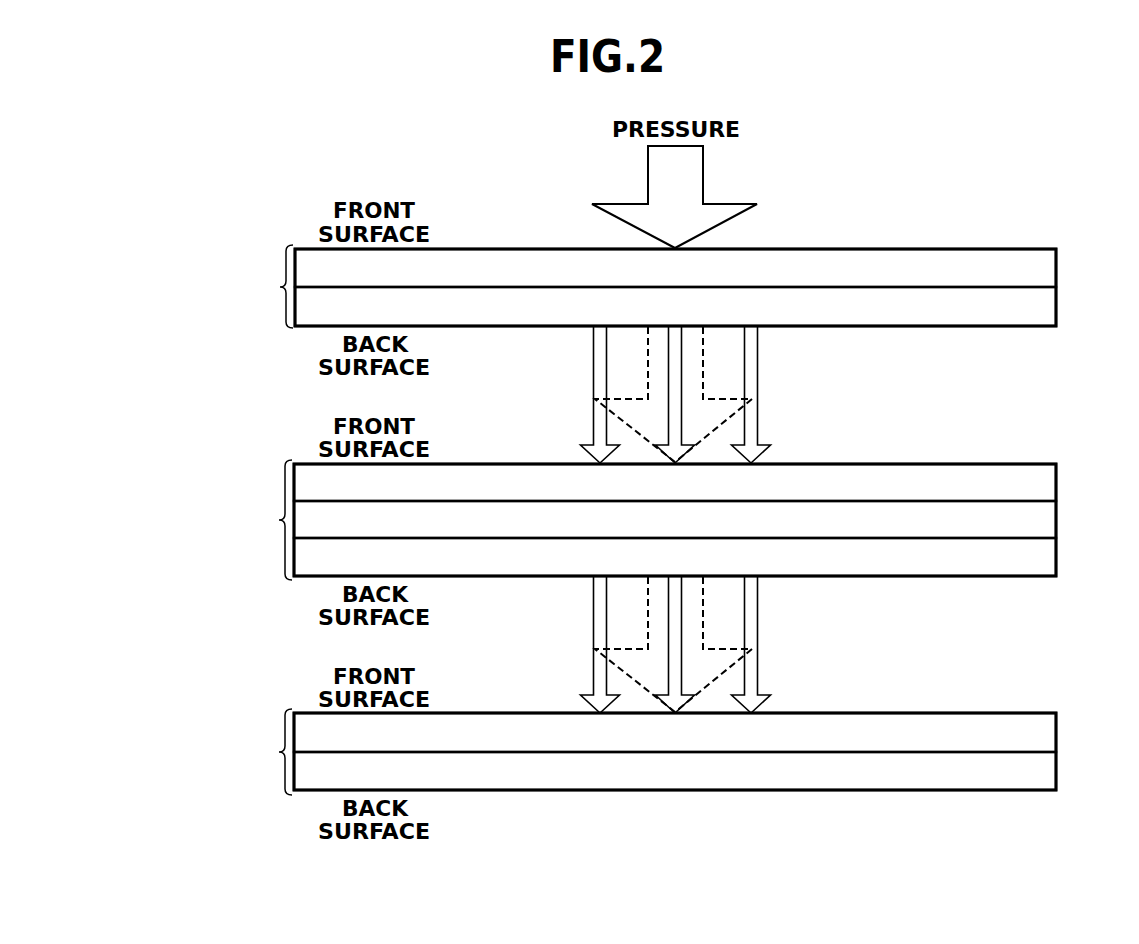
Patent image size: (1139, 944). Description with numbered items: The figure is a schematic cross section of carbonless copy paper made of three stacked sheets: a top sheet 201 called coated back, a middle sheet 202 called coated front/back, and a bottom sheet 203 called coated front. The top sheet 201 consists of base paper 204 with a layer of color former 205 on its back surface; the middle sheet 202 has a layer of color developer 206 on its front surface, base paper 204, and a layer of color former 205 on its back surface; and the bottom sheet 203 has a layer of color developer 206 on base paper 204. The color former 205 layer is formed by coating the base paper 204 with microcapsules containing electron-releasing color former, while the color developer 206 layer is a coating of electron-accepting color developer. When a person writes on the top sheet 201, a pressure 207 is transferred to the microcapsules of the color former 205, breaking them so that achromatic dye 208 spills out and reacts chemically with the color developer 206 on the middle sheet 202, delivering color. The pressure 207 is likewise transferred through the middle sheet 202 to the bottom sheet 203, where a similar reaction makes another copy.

The top sheet 201 is at (594, 286).
The middle sheet 202 is at (570, 520).
The bottom sheet 203 is at (568, 752).
The base paper 204 is at (977, 249).
The color former 205 is at (980, 328).
The color developer 206 is at (977, 463).
The pressure 207 is at (704, 172).
The achromatic dye 208 is at (758, 378).